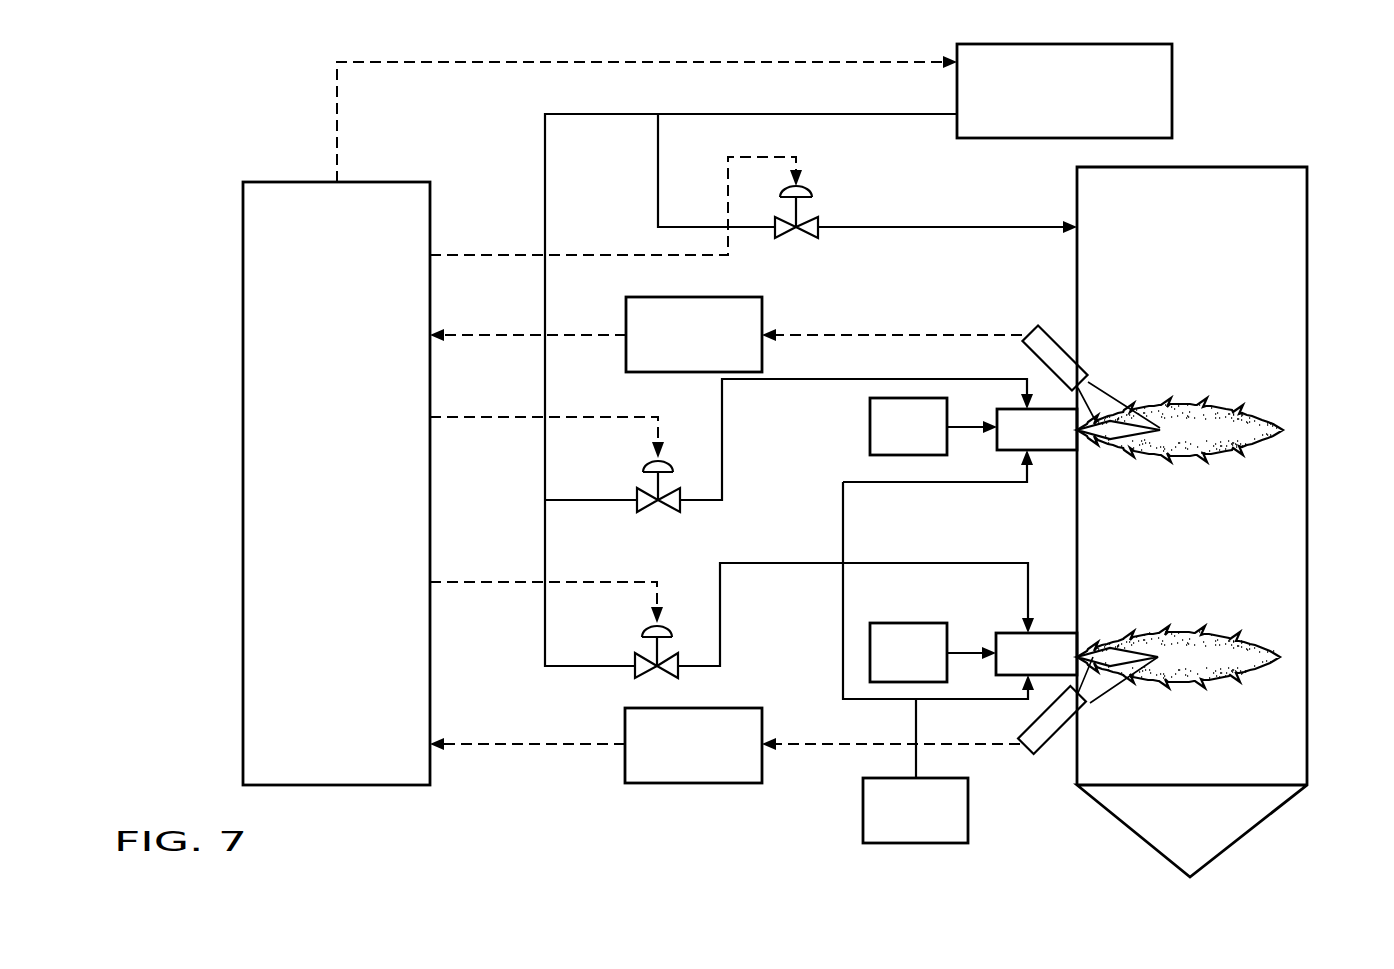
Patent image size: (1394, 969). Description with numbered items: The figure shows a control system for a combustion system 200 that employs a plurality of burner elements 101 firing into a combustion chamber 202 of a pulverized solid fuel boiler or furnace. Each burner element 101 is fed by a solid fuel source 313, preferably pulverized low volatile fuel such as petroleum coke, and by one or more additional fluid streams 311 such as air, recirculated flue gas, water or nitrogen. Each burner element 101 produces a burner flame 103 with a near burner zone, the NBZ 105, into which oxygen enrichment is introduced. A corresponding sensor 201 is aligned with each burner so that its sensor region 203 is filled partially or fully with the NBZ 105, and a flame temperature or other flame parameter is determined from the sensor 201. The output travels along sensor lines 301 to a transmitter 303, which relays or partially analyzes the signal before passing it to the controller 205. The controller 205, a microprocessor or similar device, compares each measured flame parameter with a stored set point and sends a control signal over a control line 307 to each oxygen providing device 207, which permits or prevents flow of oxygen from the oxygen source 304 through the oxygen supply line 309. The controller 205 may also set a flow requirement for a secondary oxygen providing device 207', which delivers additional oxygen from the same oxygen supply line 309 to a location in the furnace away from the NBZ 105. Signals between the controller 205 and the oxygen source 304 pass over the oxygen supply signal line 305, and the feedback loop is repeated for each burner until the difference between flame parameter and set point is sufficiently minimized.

The combustion system 200 is at (1258, 112).
The combustion chamber 202 is at (1192, 522).
The controller 205 is at (336, 483).
The oxygen source 304 is at (1064, 91).
The oxygen supply signal line 305 is at (587, 62).
The oxygen supply line 309 is at (545, 180).
The control line 307 is at (566, 255).
The oxygen providing device 207 is at (647, 587).
The secondary oxygen providing device 207' is at (831, 230).
The transmitter 303 is at (693, 540).
The sensor line 301 is at (900, 335).
The solid fuel source 313 is at (933, 540).
The burner element 101 is at (1058, 433).
The additional fluid stream 311 is at (915, 771).
The sensor 201 is at (1058, 340).
The sensor region 203 is at (1103, 384).
The NBZ 105 is at (1147, 410).
The burner flame 103 is at (1223, 403).